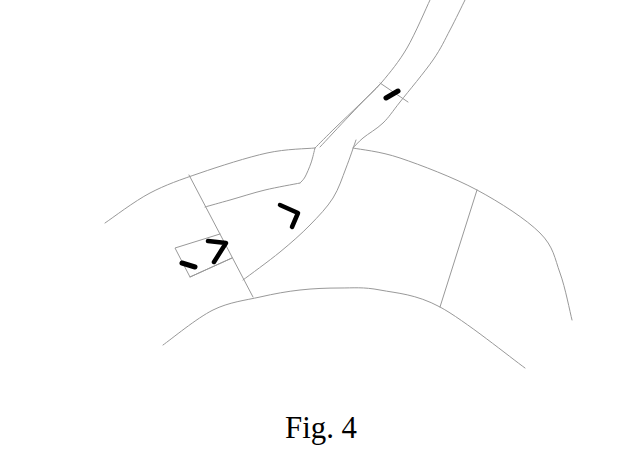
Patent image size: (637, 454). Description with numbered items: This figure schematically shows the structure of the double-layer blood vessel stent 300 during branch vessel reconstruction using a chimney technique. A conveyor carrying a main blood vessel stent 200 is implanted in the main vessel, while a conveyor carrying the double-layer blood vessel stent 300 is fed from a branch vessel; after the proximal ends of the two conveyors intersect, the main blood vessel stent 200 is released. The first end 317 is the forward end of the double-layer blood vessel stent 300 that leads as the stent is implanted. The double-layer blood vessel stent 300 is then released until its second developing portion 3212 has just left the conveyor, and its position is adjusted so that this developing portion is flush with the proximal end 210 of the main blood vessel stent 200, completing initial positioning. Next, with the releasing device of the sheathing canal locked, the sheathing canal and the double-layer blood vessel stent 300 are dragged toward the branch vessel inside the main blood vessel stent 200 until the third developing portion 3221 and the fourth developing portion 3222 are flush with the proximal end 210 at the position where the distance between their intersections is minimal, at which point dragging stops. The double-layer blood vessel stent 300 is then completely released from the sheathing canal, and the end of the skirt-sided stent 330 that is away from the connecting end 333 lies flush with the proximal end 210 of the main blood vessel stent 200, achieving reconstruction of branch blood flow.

The main blood vessel stent 200 is at (412, 218).
The double-layer blood vessel stent 300 is at (354, 133).
The connecting end 333 is at (302, 188).
The skirt-sided stent 330 is at (265, 253).
The second developing portion 3212 is at (280, 205).
The proximal end 210 is at (186, 188).
The fourth developing portion 3222 is at (213, 241).
The third developing portion 3221 is at (226, 250).
The first end 317 is at (168, 252).